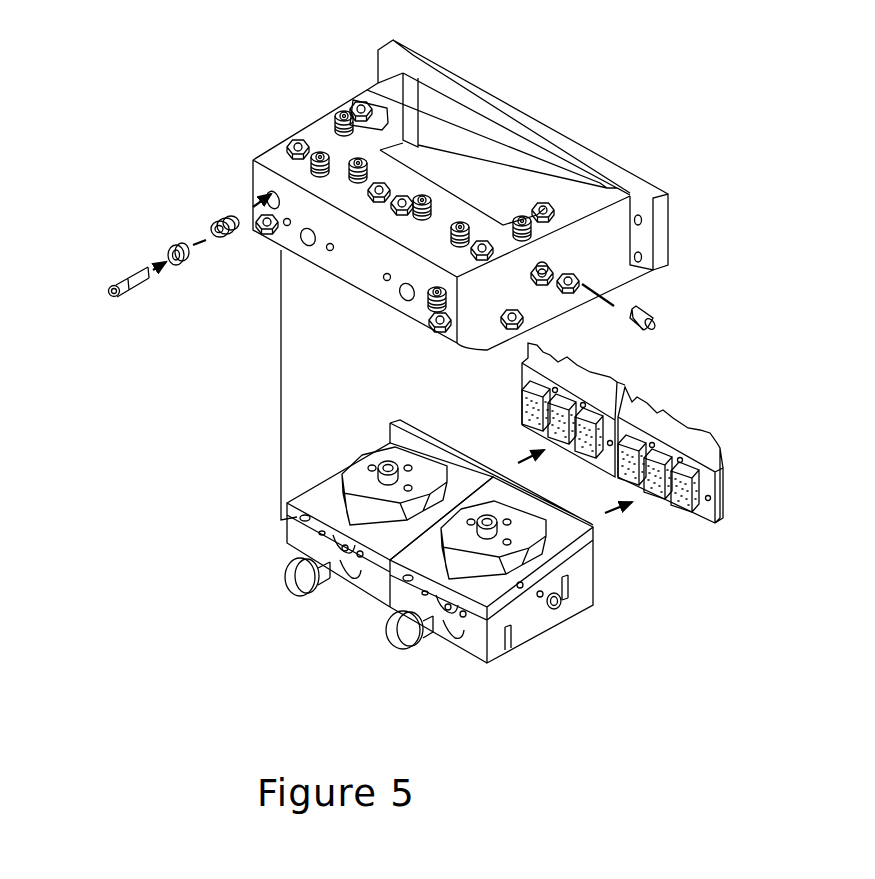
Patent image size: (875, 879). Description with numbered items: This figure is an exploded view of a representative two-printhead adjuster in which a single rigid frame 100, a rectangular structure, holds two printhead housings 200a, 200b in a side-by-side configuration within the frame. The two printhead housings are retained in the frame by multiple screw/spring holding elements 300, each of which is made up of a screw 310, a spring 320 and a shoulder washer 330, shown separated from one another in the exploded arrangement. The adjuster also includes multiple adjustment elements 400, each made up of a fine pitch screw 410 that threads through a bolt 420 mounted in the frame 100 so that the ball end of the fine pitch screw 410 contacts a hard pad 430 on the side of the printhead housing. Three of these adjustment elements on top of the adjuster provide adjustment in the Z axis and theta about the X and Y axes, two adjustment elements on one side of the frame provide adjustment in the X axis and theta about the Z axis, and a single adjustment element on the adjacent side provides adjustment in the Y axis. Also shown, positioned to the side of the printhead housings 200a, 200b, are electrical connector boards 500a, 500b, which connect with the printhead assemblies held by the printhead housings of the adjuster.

The single rigid frame 100 is at (569, 136).
The screw/spring holding element 300 is at (357, 158).
The screw 310 is at (140, 283).
The spring 320 is at (221, 215).
The shoulder washer 330 is at (167, 245).
The adjustment element 400 is at (704, 283).
The fine pitch screw 410 is at (658, 311).
The bolt 420 is at (579, 281).
The hard pad 430 is at (558, 604).
The printhead housing 200a is at (437, 435).
The printhead housing 200b is at (492, 478).
The electrical connector board 500a is at (620, 382).
The electrical connector board 500b is at (674, 415).